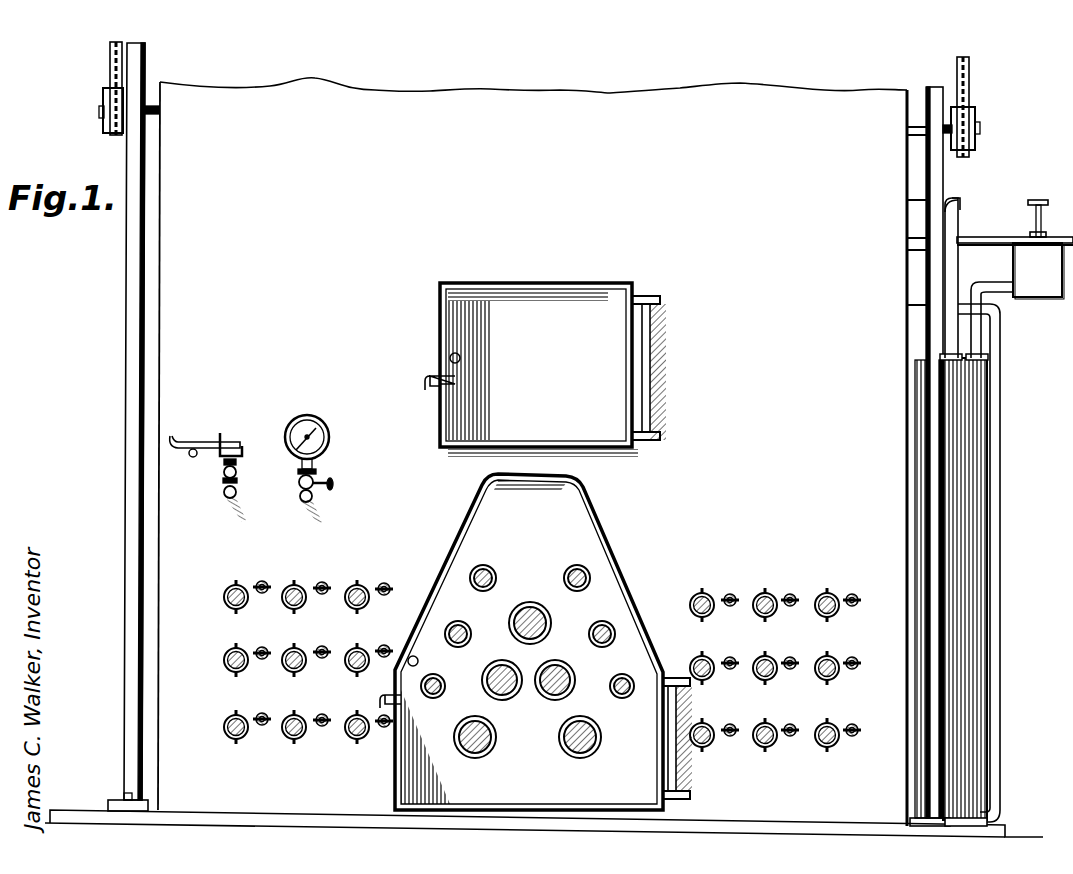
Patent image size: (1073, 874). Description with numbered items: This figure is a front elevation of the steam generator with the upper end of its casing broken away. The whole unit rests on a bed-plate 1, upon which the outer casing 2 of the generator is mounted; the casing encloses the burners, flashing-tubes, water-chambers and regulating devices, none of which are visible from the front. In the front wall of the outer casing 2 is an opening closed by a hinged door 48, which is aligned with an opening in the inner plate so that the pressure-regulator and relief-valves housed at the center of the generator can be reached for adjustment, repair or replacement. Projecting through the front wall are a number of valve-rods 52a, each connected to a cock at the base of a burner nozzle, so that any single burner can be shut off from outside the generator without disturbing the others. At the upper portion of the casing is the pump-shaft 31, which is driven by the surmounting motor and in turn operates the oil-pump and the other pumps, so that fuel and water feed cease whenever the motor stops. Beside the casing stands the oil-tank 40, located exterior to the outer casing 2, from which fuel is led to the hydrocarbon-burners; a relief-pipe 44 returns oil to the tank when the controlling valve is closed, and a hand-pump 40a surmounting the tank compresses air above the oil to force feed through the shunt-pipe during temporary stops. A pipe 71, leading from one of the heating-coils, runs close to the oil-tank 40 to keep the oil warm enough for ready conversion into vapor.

The bed-plate 1 is at (88, 815).
The outer casing 2 is at (532, 452).
The pump-shaft 31 is at (158, 112).
The oil-tank 40 is at (968, 487).
The hand-pump 40a is at (1038, 249).
The relief-pipe 44 is at (963, 237).
The hinged door 48 is at (545, 370).
The valve-rod 52a is at (324, 586).
The pipe 71 is at (968, 403).